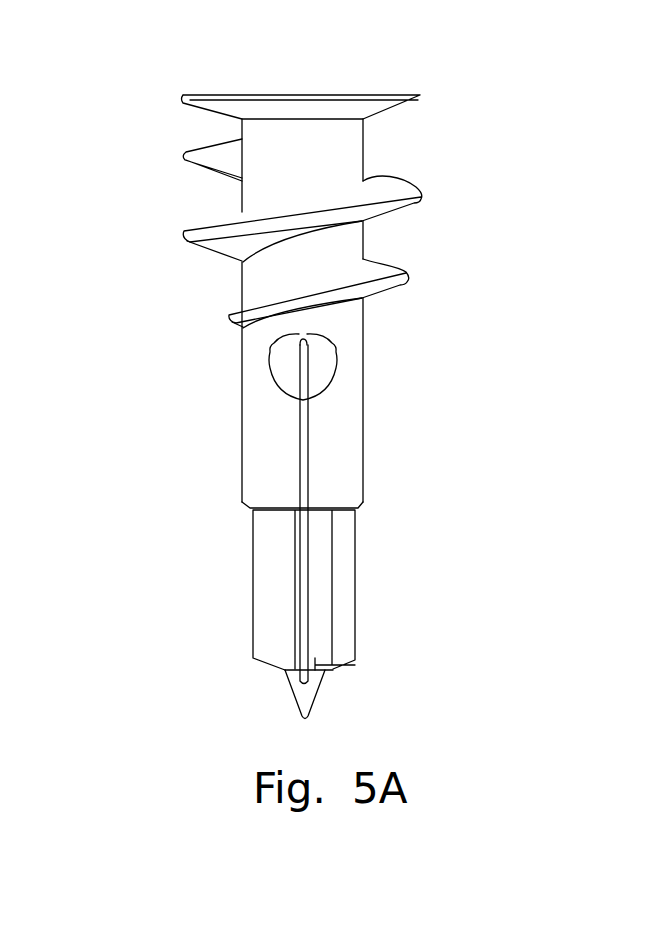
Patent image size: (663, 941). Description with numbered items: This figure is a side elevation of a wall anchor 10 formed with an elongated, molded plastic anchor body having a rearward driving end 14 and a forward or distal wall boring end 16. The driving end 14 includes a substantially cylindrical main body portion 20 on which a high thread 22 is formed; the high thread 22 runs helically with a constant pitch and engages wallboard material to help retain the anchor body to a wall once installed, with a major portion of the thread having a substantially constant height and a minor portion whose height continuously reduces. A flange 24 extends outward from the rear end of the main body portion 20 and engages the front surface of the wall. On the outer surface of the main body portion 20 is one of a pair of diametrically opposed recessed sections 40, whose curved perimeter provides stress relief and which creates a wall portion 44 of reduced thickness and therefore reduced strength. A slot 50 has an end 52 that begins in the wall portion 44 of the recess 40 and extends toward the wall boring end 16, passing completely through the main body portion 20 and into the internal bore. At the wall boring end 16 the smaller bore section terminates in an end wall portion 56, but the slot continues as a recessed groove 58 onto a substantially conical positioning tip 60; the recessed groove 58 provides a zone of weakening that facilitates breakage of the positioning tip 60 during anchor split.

The anchor 10 is at (478, 38).
The driving end 14 is at (154, 161).
The wall boring end 16 is at (201, 606).
The main body portion 20 is at (376, 323).
The high thread 22 is at (422, 202).
The flange 24 is at (393, 105).
The recessed section 40 is at (333, 385).
The wall portion 44 is at (325, 367).
The slot 50 is at (306, 457).
The end of slot 52 is at (297, 336).
The end wall portion 56 is at (302, 638).
The recessed groove 58 is at (285, 672).
The positioning tip 60 is at (316, 692).